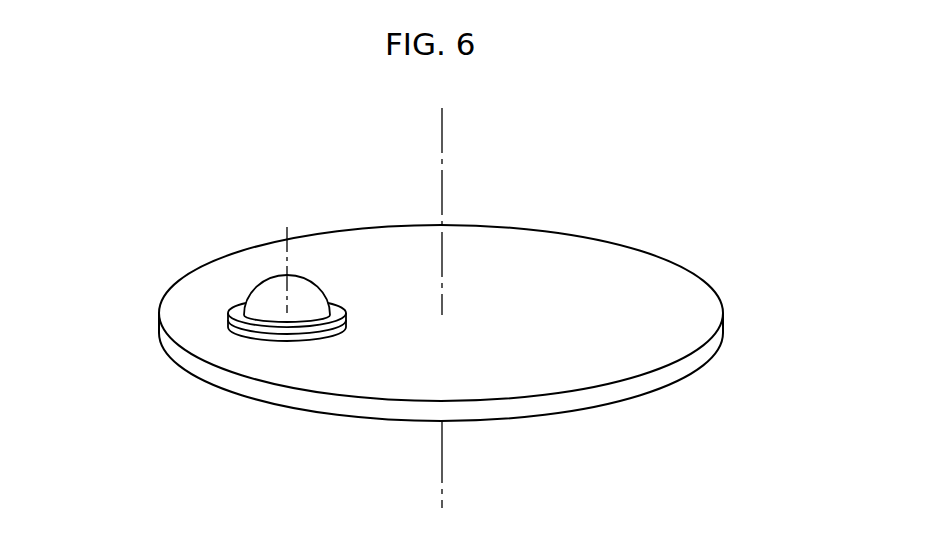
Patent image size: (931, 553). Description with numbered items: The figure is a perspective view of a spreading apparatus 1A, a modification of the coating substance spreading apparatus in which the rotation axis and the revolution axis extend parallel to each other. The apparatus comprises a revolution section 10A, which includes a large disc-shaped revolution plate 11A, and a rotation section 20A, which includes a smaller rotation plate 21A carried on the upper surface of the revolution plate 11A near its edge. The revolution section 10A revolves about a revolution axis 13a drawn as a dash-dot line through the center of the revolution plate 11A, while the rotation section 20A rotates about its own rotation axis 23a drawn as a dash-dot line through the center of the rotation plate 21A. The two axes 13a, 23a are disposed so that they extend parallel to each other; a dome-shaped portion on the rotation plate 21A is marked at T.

The spreading apparatus 1A is at (222, 92).
The revolution section 10A is at (697, 388).
The revolution plate 11A is at (697, 275).
The revolution axis 13a is at (443, 143).
The rotation section 20A is at (200, 315).
The rotation plate 21A is at (247, 337).
The rotation axis 23a is at (287, 258).
The apex point of dome T is at (318, 284).